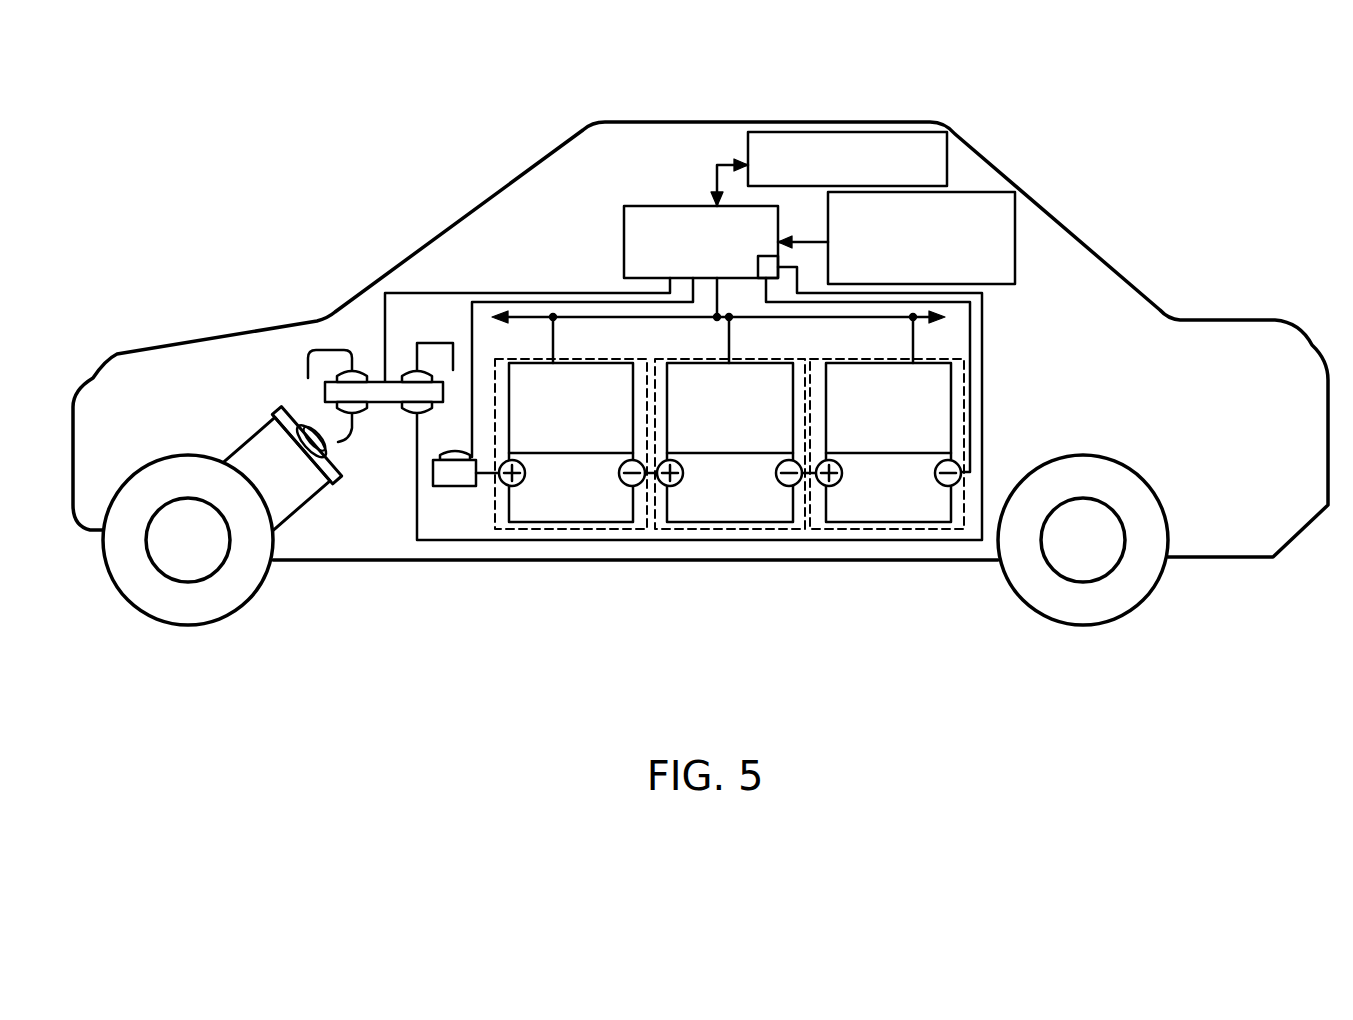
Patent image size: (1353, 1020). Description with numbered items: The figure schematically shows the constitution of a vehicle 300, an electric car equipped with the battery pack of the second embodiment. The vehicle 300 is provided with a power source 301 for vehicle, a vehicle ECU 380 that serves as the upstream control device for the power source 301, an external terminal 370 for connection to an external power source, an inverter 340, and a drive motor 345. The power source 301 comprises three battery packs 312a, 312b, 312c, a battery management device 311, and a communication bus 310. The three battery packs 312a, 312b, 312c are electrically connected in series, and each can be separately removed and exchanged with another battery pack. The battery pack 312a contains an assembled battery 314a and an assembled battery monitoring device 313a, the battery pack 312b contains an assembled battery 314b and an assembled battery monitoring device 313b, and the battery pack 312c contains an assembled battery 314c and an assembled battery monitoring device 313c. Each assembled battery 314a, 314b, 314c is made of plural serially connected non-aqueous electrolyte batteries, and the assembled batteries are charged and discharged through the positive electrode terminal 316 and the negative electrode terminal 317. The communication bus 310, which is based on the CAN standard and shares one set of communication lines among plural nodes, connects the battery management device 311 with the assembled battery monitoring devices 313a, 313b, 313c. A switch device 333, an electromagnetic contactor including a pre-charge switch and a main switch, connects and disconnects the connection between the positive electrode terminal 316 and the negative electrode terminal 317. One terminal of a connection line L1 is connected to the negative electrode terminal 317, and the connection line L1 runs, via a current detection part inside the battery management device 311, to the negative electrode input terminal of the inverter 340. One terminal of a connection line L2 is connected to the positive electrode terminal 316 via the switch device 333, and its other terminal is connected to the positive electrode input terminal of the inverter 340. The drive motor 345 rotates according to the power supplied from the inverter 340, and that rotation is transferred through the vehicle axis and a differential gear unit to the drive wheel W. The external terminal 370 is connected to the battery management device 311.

The vehicle 300 is at (392, 572).
The power source for vehicle 301 is at (586, 248).
The communication bus 310 is at (530, 315).
The battery management device 311 is at (676, 206).
The battery pack 312a is at (834, 530).
The battery pack 312b is at (700, 530).
The battery pack 312c is at (540, 530).
The assembled battery monitoring device 313a is at (840, 361).
The assembled battery monitoring device 313b is at (692, 360).
The assembled battery monitoring device 313c is at (545, 360).
The assembled battery 314a is at (916, 523).
The assembled battery 314b is at (772, 523).
The assembled battery 314c is at (612, 523).
The positive electrode terminal 316 is at (497, 478).
The negative electrode terminal 317 is at (962, 476).
The switch device 333 is at (455, 486).
The inverter 340 is at (380, 403).
The drive motor 345 is at (262, 452).
The external terminal 370 is at (1010, 284).
The vehicle ECU 380 is at (885, 132).
The connection line L1 is at (970, 388).
The connection line L2 is at (435, 343).
The drive wheel W is at (188, 548).